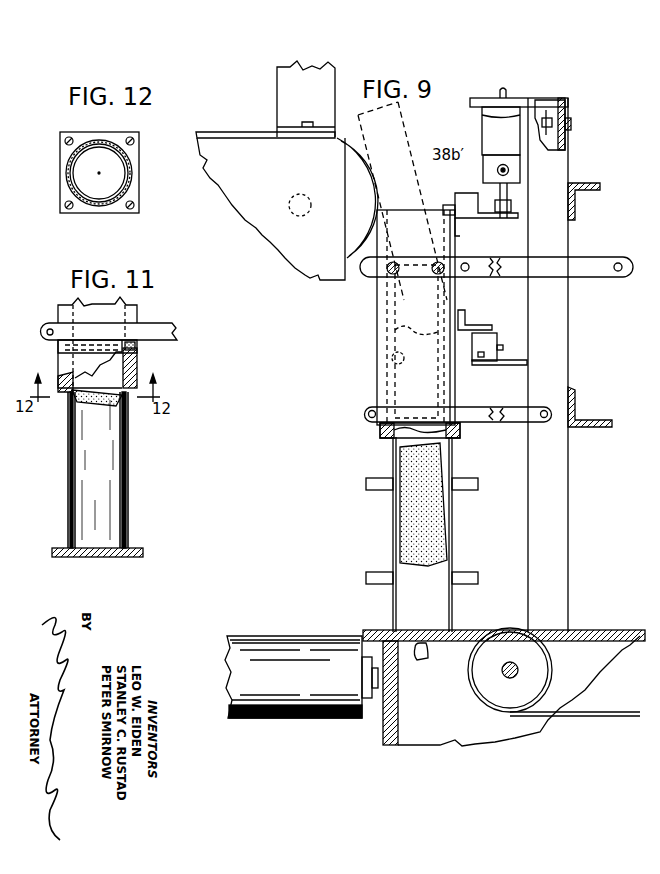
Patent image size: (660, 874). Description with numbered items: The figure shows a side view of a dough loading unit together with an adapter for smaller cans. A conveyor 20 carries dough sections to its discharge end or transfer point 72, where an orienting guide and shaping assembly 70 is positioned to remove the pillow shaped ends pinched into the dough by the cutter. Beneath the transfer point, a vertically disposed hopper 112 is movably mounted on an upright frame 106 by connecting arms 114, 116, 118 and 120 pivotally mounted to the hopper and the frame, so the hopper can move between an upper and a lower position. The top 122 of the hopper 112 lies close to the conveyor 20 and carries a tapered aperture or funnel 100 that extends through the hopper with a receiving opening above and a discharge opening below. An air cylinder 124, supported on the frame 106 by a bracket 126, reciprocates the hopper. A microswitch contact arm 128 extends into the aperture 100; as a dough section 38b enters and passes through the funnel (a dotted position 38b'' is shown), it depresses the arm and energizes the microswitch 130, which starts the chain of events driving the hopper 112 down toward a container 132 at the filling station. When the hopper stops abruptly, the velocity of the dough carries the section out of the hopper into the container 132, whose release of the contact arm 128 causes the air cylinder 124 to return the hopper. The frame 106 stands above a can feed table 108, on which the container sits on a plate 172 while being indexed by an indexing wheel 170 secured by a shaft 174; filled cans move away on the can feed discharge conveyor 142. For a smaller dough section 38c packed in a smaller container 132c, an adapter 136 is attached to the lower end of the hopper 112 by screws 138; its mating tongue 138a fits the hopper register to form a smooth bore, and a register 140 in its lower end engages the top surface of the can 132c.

In FIG. 9, the conveyor 20 is at (220, 132).
In FIG. 9, the orienting guide and shaping assembly 70 is at (277, 97).
In FIG. 9, the discharge end or transfer point 72 is at (355, 158).
In FIG. 9, the tapered aperture or funnel 100 is at (392, 360).
In FIG. 9, the upright frame 106 is at (572, 362).
In FIG. 9, the can feed table 108 is at (458, 719).
In FIG. 11, the hopper 112 is at (140, 312).
In FIG. 9, the hopper 112 is at (387, 392).
In FIG. 9, the connecting arm 114 is at (500, 266).
In FIG. 9, the connecting arm 116 is at (598, 258).
In FIG. 9, the connecting arm 118 is at (495, 408).
In FIG. 11, the connecting arm 120 is at (60, 330).
In FIG. 9, the connecting arm 120 is at (538, 409).
In FIG. 9, the top of the hopper 122 is at (399, 210).
In FIG. 9, the air cylinder 124 is at (521, 171).
In FIG. 9, the bracket 126 is at (545, 100).
In FIG. 9, the microswitch contact arm 128 is at (446, 205).
In FIG. 9, the microswitch 130 is at (473, 208).
In FIG. 9, the container 132 is at (452, 522).
In FIG. 11, the container 132c is at (105, 490).
In FIG. 12, the adapter 136 is at (140, 160).
In FIG. 11, the adapter 136 is at (138, 372).
In FIG. 12, the screws 138 is at (134, 203).
In FIG. 11, the mating tongue 138a is at (136, 347).
In FIG. 12, the register 140 is at (67, 178).
In FIG. 11, the register 140 is at (70, 392).
In FIG. 9, the register 140 is at (580, 628).
In FIG. 9, the can feed discharge conveyor 142 is at (336, 636).
In FIG. 9, the indexing wheel 170 is at (367, 576).
In FIG. 9, the plate 172 is at (446, 673).
In FIG. 9, the shaft 174 is at (418, 660).
In FIG. 9, the dough section 38b is at (452, 504).
In FIG. 9, the dotted position of dough section 38b'' is at (380, 341).
In FIG. 11, the smaller dough section 38c is at (118, 404).